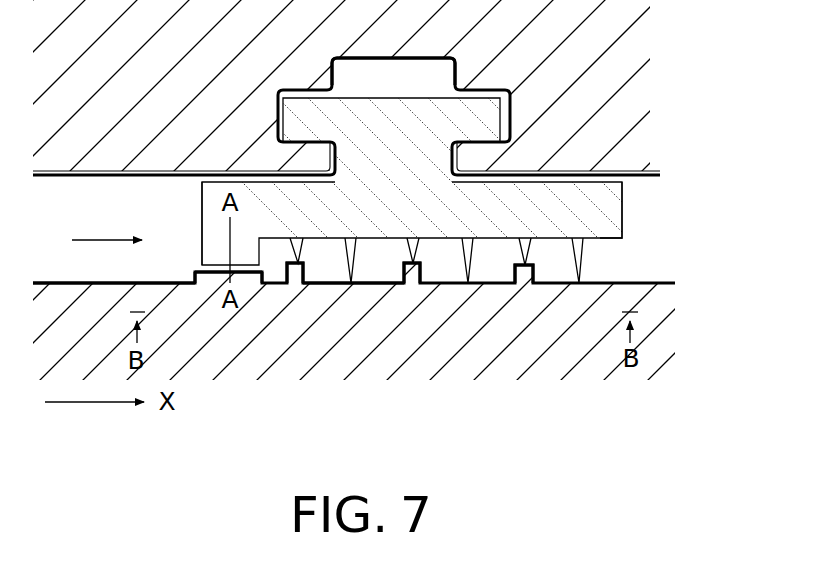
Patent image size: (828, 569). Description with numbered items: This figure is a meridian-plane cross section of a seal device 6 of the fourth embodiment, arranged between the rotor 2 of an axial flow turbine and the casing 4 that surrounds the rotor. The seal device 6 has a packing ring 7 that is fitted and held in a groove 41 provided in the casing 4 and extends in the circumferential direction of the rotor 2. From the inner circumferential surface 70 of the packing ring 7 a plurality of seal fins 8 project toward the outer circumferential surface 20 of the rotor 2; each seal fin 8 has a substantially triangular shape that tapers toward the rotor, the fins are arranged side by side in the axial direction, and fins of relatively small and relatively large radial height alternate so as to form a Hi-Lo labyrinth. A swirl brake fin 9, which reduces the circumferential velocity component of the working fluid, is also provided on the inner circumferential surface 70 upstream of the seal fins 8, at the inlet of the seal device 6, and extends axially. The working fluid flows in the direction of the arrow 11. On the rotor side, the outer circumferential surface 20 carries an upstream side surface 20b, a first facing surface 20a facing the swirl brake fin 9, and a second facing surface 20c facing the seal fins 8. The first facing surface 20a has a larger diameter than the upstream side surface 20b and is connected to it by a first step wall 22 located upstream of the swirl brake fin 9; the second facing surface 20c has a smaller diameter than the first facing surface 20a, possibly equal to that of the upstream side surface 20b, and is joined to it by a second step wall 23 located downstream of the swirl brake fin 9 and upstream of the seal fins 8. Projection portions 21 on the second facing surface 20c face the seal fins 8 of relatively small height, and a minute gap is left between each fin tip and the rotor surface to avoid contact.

The rotor 2 is at (655, 340).
The casing 4 is at (593, 145).
The groove 41 is at (512, 97).
The seal device 6 is at (416, 84).
The packing ring 7 is at (603, 197).
The inner circumferential surface 70 is at (622, 242).
The seal fin 8 is at (304, 248).
The swirl brake fin 9 is at (202, 250).
The working fluid flow 11 is at (88, 240).
The outer circumferential surface 20 is at (637, 278).
The first facing surface 20a is at (200, 268).
The upstream side surface 20b is at (42, 283).
The second facing surface 20c is at (376, 284).
The projection portion 21 is at (302, 270).
The first step wall 22 is at (193, 275).
The second step wall 23 is at (266, 281).